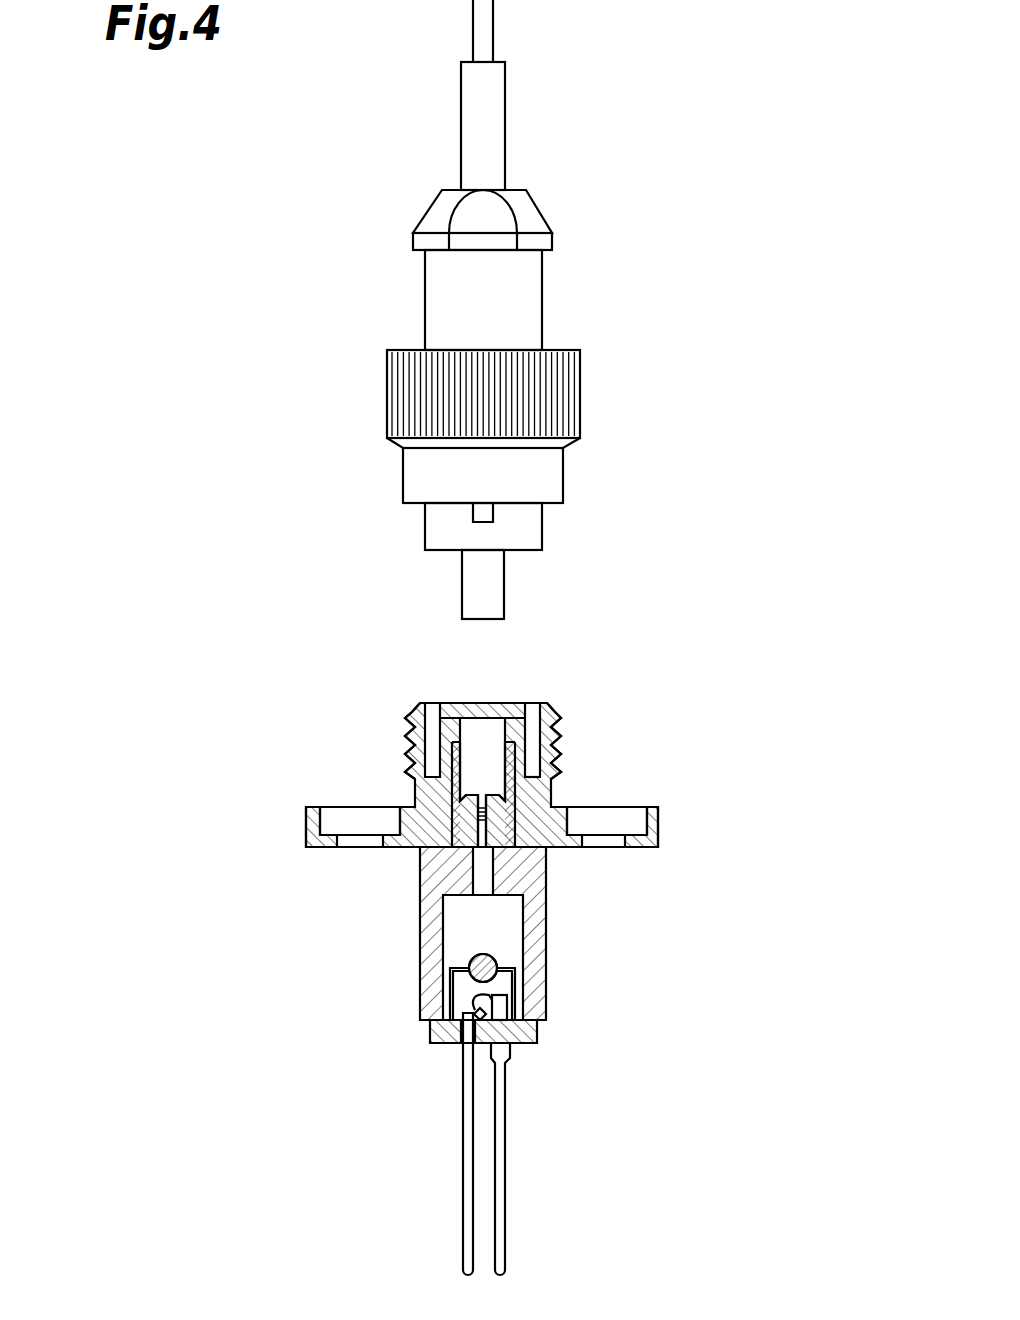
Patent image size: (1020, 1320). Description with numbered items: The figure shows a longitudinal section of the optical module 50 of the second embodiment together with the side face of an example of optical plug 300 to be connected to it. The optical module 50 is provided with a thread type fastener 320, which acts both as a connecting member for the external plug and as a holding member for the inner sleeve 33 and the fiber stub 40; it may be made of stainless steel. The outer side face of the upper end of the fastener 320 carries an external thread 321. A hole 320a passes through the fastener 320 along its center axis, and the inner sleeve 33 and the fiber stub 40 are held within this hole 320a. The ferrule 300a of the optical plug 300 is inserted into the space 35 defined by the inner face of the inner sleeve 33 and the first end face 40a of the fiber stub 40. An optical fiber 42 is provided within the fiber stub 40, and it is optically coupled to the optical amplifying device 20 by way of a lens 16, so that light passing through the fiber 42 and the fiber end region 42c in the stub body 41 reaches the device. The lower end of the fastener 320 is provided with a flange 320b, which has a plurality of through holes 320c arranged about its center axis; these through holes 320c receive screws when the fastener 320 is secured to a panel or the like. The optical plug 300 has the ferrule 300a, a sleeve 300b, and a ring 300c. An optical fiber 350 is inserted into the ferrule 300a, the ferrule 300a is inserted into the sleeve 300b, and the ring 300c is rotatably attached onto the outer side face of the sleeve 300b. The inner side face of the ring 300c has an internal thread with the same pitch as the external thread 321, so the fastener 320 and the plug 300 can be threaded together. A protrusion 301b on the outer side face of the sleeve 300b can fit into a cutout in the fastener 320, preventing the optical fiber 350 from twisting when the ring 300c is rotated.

The optical plug 300 is at (657, 382).
The optical fiber 350 is at (493, 40).
The ferrule 300a is at (505, 108).
The sleeve 300b is at (542, 295).
The ring 300c is at (387, 398).
The protrusion 301b is at (468, 512).
The optical module 50 is at (195, 750).
The thread type fastener 320 is at (415, 790).
The external thread 321 is at (557, 718).
The hole 320a is at (493, 740).
The inner sleeve 33 is at (445, 750).
The space 35 is at (497, 767).
The fiber stub 40 is at (480, 770).
The first end face 40a is at (522, 785).
The through holes 320c is at (347, 817).
The flange 320b is at (305, 822).
The stub ferrule 41 is at (476, 830).
The optical fiber stub 42c is at (490, 823).
The optical fiber 42 is at (420, 893).
The lens 16 is at (470, 958).
The optical amplifying device 20 is at (472, 1000).